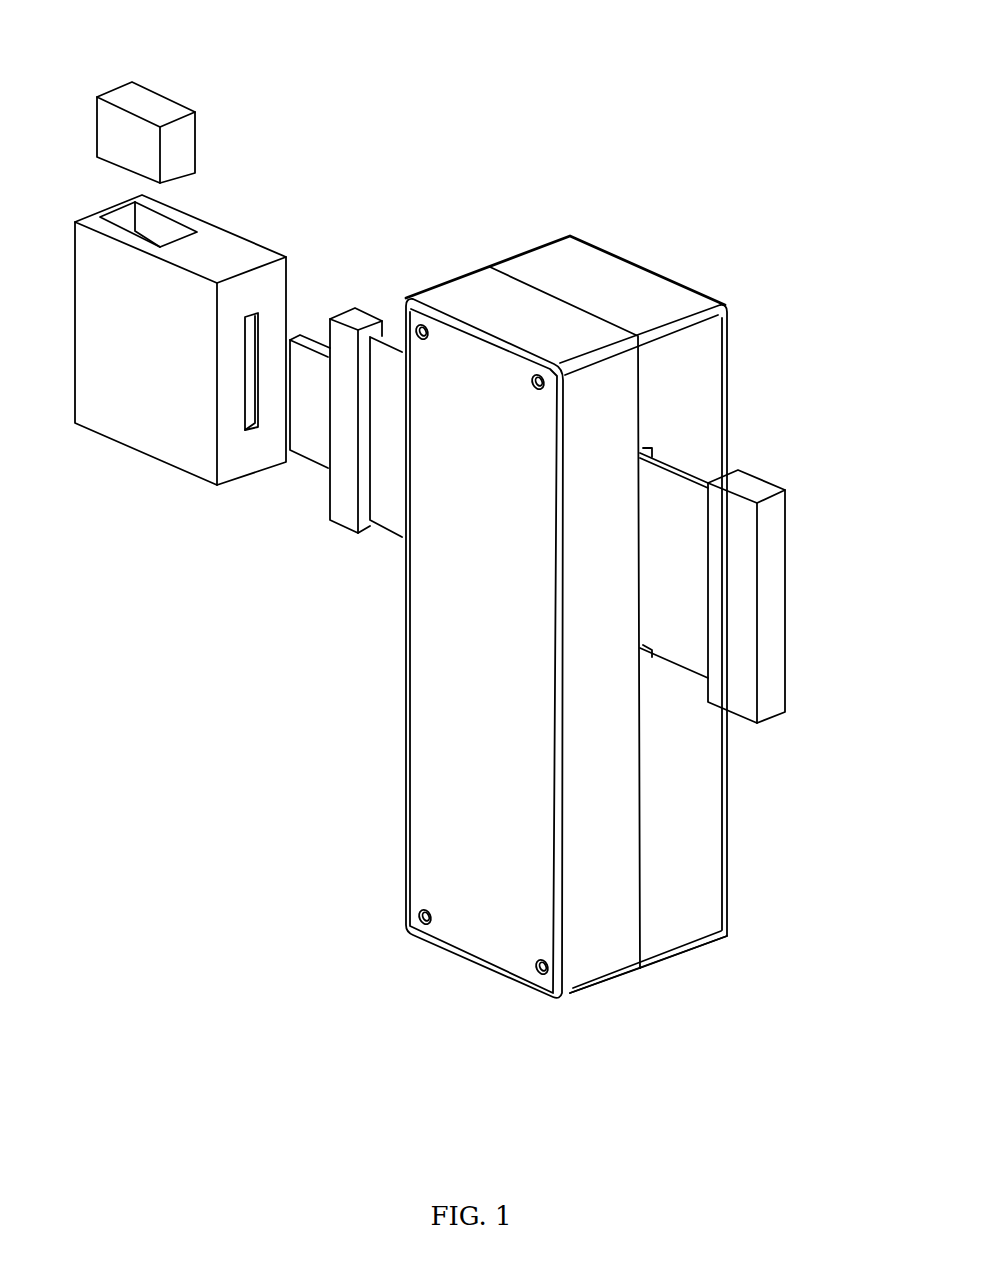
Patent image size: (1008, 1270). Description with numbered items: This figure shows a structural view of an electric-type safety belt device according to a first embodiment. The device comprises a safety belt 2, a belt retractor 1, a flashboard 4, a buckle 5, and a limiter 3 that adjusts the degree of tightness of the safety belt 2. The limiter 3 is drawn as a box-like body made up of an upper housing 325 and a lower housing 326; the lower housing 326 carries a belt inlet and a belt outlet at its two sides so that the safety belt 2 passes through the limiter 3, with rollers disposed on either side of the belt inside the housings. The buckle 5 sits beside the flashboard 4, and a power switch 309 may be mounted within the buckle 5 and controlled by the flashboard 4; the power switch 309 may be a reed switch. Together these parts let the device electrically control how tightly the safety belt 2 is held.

The belt retractor 1 is at (737, 483).
The safety belt 2 is at (663, 495).
The limiter 3 is at (645, 255).
The flashboard 4 is at (360, 317).
The buckle 5 is at (232, 268).
The power switch 309 is at (158, 112).
The upper housing 325 is at (605, 963).
The lower housing 326 is at (702, 898).